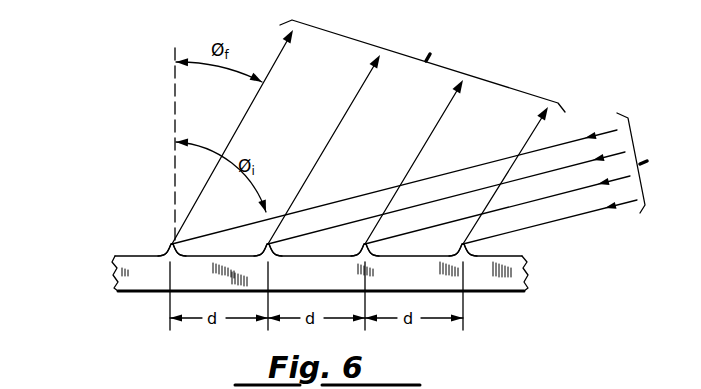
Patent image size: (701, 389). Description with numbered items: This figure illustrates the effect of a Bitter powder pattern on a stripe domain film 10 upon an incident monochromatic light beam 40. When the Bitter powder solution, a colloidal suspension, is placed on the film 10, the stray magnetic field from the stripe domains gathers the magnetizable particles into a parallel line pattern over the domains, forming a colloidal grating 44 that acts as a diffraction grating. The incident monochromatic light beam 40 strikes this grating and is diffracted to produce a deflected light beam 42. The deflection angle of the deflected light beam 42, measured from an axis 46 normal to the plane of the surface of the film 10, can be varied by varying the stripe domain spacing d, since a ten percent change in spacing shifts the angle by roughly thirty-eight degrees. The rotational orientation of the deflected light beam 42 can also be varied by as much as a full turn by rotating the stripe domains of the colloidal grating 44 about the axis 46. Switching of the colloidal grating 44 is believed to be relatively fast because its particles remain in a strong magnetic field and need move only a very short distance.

The film 10 is at (525, 283).
The incident monochromatic light beam 40 is at (426, 178).
The deflected light beam 42 is at (368, 132).
The colloidal grating 44 is at (166, 243).
The axis 46 is at (175, 100).